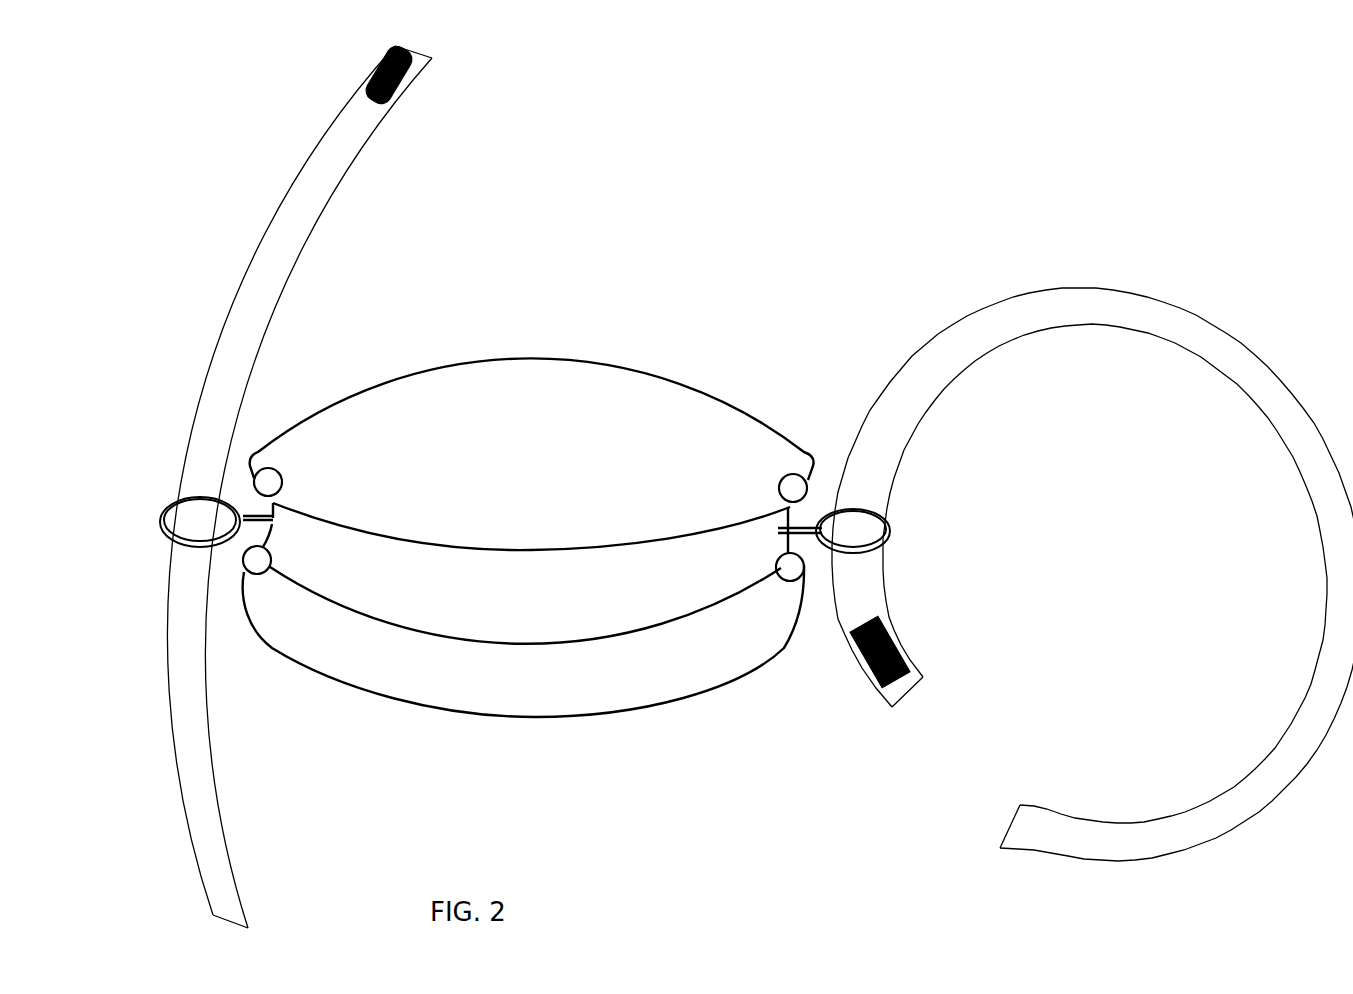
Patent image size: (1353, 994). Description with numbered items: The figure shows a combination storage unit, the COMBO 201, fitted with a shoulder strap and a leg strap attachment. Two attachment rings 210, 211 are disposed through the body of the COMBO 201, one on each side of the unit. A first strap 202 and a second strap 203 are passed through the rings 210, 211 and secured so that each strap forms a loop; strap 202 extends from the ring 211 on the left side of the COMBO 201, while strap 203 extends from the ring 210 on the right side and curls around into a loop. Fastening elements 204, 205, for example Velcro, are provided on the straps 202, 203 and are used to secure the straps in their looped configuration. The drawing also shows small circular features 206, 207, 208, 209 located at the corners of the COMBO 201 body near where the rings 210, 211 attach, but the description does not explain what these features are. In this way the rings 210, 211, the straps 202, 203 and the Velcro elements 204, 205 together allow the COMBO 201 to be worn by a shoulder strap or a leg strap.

The COMBO 201 is at (598, 398).
The strap 202 is at (305, 218).
The strap 203 is at (1088, 303).
The Velcro 204 is at (408, 80).
The Velcro 205 is at (905, 676).
The upper right hinge pin 206 is at (793, 488).
The upper left hinge pin 207 is at (265, 478).
The lower left hinge pin 208 is at (262, 570).
The lower right hinge pin 209 is at (790, 567).
The attachment ring 210 is at (890, 533).
The attachment ring 211 is at (178, 500).